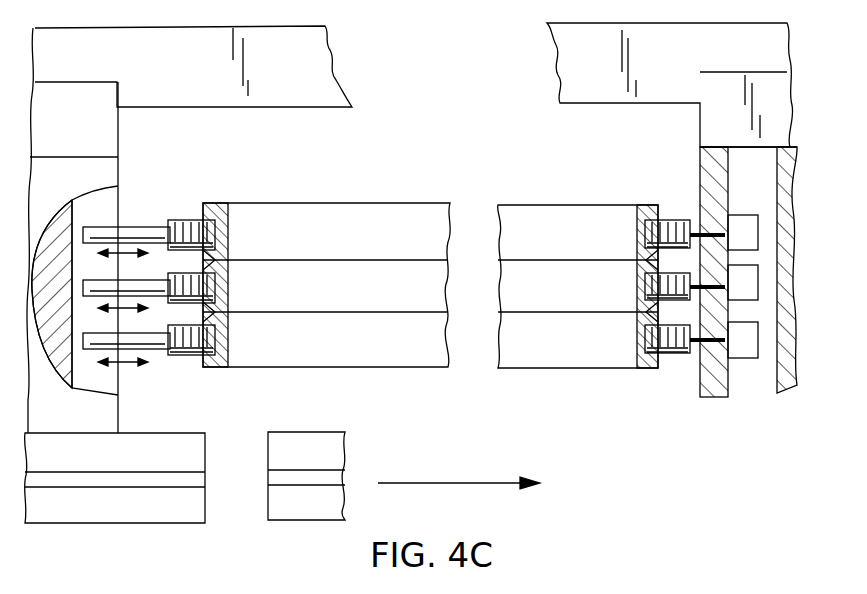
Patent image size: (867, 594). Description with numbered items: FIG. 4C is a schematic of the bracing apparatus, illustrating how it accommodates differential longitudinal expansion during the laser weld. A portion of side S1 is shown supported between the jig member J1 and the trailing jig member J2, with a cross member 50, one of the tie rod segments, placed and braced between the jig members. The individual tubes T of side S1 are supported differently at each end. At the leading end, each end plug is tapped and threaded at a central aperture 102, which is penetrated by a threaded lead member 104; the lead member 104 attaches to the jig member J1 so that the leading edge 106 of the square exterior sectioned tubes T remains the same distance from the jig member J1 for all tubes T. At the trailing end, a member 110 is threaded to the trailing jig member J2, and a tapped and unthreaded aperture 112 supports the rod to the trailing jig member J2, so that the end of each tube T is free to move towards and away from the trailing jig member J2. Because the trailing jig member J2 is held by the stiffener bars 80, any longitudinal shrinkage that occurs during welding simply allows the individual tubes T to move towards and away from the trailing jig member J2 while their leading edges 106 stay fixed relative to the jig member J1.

The stiffener bars 80 is at (330, 54).
The trailing jig member J2 is at (118, 208).
The member 110 is at (143, 340).
The tapped and unthreaded aperture 112 is at (196, 355).
The side S1 is at (334, 292).
The tubes T is at (452, 250).
The central aperture 102 is at (650, 278).
The threaded lead member 104 is at (650, 298).
The leading edge 106 is at (660, 306).
The jig member J1 is at (718, 390).
The cross members 50 is at (340, 448).